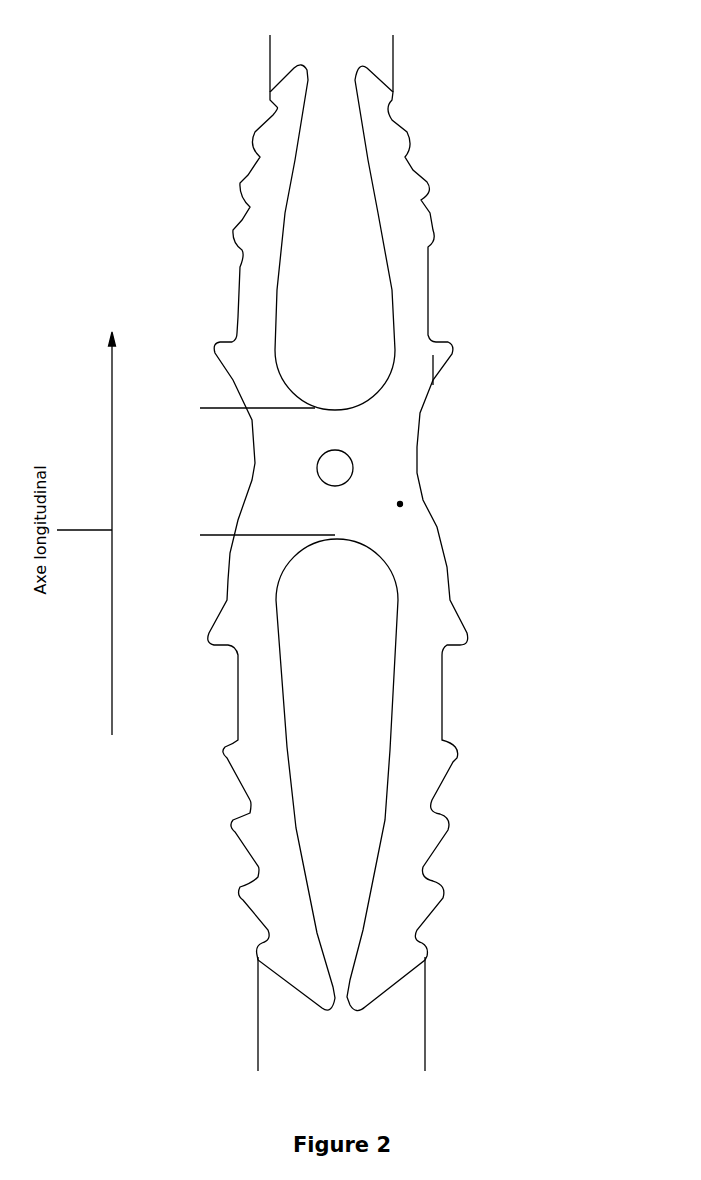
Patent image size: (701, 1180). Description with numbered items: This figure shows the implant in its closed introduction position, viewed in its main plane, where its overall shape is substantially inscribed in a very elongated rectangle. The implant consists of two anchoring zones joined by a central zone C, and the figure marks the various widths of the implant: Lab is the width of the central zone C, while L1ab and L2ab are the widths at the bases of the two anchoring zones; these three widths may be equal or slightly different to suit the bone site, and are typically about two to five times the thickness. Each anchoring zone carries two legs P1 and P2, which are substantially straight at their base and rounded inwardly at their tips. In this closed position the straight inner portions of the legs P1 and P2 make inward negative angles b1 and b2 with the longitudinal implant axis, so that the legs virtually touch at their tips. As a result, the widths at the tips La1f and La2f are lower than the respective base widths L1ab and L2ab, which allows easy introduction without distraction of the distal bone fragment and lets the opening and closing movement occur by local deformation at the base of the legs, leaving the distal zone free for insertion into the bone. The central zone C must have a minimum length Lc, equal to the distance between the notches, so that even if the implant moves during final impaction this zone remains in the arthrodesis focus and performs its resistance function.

The width at the tip of the second anchoring zone La2f is at (393, 40).
The inward negative angle of legs P2 b2 is at (307, 213).
The legs of the second anchoring zone P2 is at (334, 319).
The width at the base of the second anchoring zone L2ab is at (235, 377).
The minimum length of the central zone Lc is at (205, 535).
The width of the central zone Lab is at (253, 467).
The central zone C is at (400, 504).
The width at the base of the first anchoring zone L1ab is at (229, 570).
The inward negative angle of legs P1 b1 is at (307, 752).
The legs of the first anchoring zone P1 is at (340, 768).
The width at the tip of the first anchoring zone La1f is at (425, 1065).